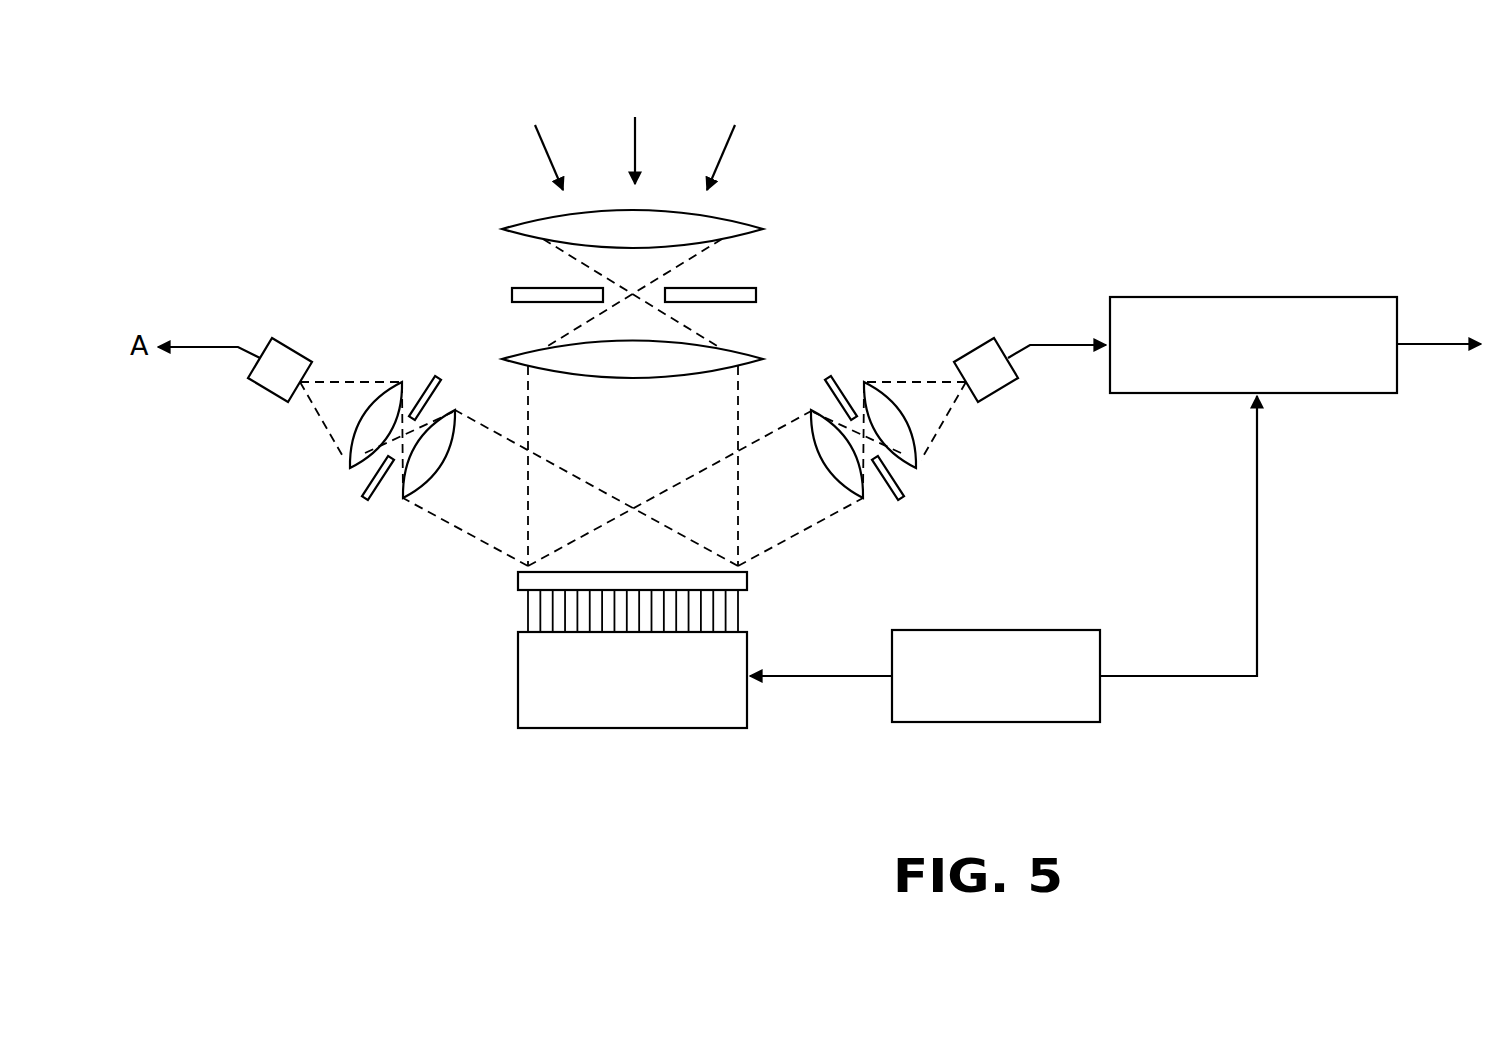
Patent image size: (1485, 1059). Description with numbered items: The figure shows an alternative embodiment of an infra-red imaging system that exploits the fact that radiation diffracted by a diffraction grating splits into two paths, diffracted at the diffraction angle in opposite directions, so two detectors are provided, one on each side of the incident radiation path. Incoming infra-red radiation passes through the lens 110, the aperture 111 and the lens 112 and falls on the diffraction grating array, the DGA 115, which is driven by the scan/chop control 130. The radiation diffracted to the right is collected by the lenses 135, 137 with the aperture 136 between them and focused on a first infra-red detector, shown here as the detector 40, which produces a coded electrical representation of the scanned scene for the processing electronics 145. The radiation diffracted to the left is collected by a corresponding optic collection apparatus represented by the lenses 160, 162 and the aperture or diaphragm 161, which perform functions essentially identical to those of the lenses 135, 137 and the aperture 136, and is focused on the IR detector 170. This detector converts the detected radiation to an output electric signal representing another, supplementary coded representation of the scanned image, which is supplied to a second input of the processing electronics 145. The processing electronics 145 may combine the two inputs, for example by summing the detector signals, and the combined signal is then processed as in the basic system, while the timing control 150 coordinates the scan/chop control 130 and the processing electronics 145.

The lens 110 is at (734, 217).
The aperture 111 is at (738, 287).
The lens 112 is at (745, 357).
The DGA 115 is at (508, 582).
The scan/chop control 130 is at (625, 728).
The lens 135 is at (863, 498).
The aperture 136 is at (899, 488).
The lens 137 is at (918, 452).
The detector 40 is at (973, 350).
The processing electronics 145 is at (1257, 297).
The timing control 150 is at (1043, 630).
The lens 160 is at (403, 498).
The aperture or diaphragm 161 is at (367, 488).
The lens 162 is at (350, 452).
The IR detector 170 is at (295, 350).